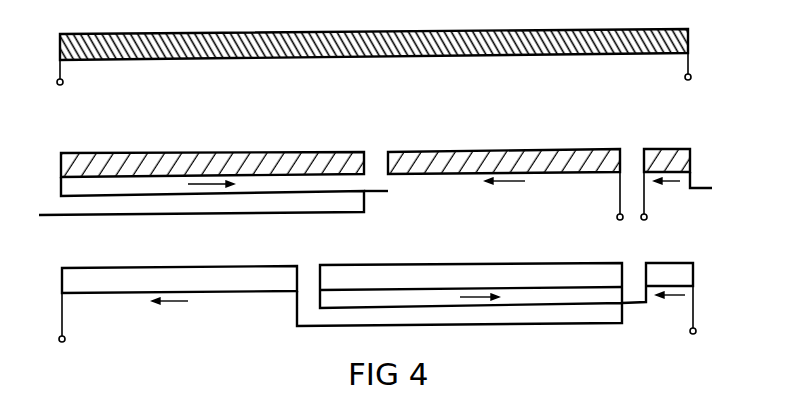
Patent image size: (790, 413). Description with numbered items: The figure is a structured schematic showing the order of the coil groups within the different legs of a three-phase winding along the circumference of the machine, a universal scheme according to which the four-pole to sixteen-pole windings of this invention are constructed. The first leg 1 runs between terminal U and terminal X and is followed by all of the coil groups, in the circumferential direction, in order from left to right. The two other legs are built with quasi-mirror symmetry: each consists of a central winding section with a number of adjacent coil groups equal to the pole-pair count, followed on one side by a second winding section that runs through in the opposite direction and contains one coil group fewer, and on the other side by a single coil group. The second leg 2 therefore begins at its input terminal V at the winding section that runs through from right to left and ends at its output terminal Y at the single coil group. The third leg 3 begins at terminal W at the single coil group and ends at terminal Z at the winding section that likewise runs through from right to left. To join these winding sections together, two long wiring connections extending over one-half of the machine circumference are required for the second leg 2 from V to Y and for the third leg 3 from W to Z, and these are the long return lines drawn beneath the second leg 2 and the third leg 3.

The first leg 1 is at (374, 32).
The second leg 2 is at (375, 170).
The third leg 3 is at (377, 285).
The terminal U is at (60, 87).
The terminal X is at (688, 81).
The input terminal V is at (620, 210).
The output terminal Y is at (644, 210).
The terminal Z is at (62, 332).
The terminal W is at (693, 326).